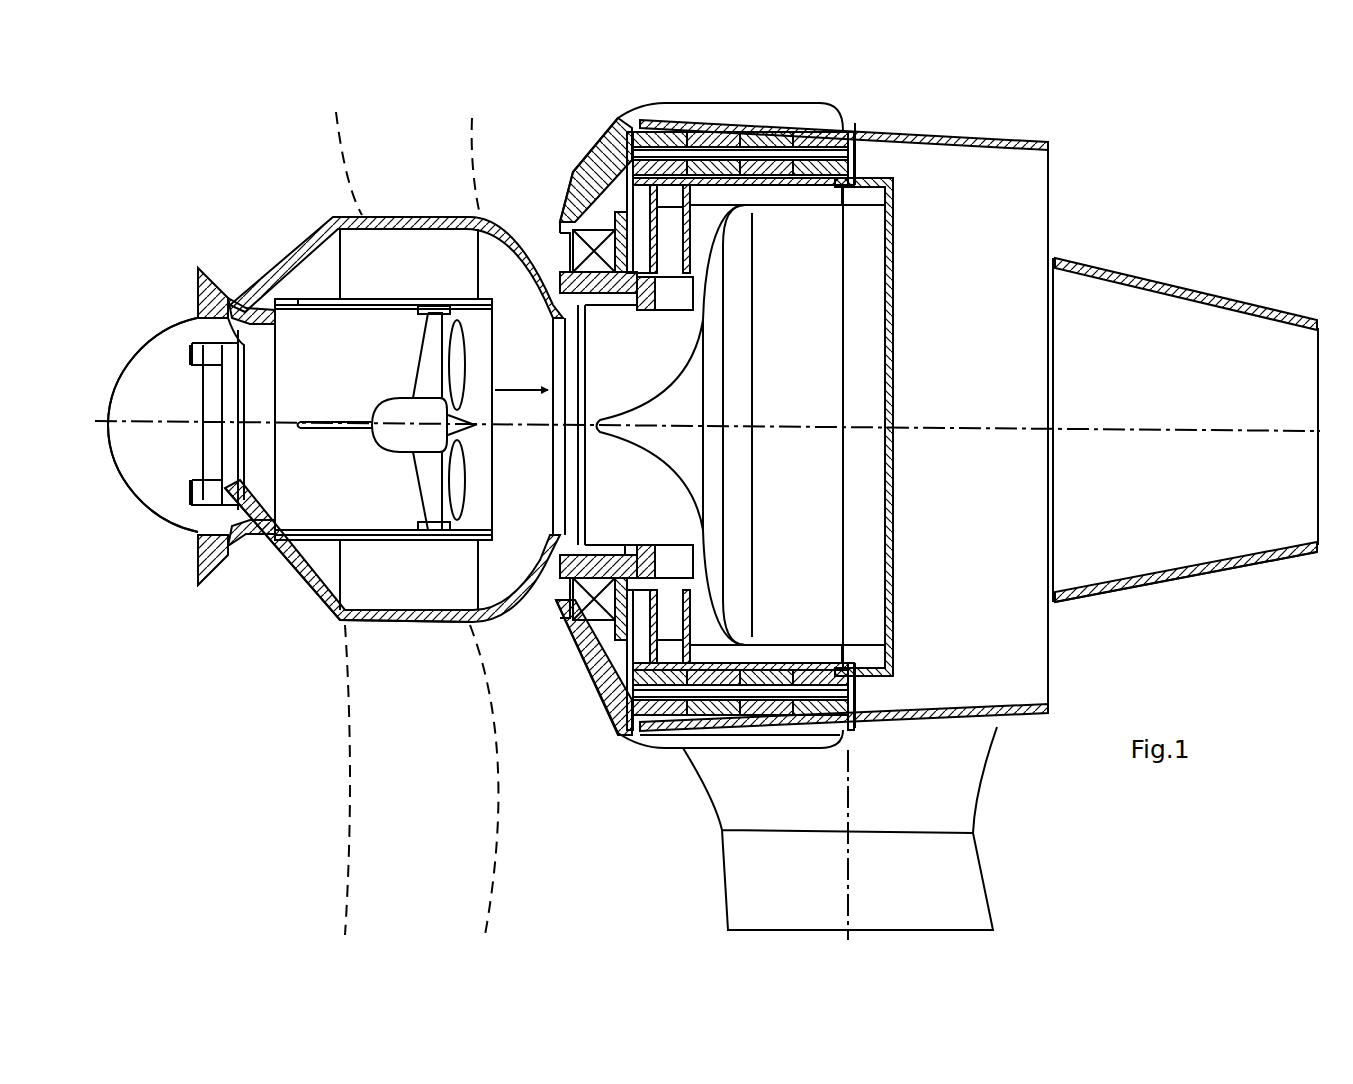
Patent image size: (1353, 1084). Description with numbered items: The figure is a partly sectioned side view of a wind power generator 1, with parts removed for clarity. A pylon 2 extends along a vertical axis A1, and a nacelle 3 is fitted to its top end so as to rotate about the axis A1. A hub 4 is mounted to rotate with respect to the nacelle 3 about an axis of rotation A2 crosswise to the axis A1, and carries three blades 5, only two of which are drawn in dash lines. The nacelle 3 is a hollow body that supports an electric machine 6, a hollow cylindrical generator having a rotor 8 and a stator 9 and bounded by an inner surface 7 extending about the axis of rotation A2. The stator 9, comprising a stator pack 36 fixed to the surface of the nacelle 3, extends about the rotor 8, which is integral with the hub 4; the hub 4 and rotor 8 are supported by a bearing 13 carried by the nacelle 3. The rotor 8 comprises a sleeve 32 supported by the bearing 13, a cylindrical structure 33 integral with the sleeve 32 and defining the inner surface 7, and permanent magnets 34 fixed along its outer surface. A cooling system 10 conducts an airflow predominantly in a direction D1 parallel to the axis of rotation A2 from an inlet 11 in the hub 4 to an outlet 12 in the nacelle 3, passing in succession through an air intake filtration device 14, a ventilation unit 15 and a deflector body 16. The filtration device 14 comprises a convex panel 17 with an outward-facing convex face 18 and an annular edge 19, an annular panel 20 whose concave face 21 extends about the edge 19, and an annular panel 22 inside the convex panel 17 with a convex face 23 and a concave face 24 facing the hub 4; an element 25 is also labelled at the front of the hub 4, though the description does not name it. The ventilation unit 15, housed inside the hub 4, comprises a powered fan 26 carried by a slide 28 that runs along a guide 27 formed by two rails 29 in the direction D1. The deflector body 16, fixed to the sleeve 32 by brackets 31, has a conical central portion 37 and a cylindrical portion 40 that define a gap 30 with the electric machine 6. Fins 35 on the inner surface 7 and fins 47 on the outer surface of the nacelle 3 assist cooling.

The wind power generator 1 is at (1200, 215).
The pylon 2 is at (950, 869).
The nacelle 3 is at (1108, 612).
The hub 4 is at (300, 615).
The blades 5 is at (372, 168).
The electric machine 6 is at (878, 136).
The inner surface 7 is at (850, 195).
The rotor 8 is at (860, 168).
The stator 9 is at (855, 145).
The cooling system 10 is at (245, 608).
The inlet 11 is at (210, 452).
The outlet 12 is at (1300, 528).
The bearing 13 is at (583, 260).
The air intake filtration device 14 is at (176, 318).
The ventilation unit 15 is at (345, 330).
The deflector body 16 is at (668, 365).
The convex panel 17 is at (150, 350).
The convex face 18 is at (125, 478).
The annular edge 19 is at (197, 530).
The annular panel 20 is at (207, 292).
The concave face 21 is at (203, 283).
The annular panel 22 is at (192, 364).
The convex face 23 is at (196, 425).
The concave face 24 is at (245, 348).
The hatched flange 25 is at (232, 302).
The powered fan 26 is at (405, 440).
The guide 27 is at (320, 338).
The slide 28 is at (425, 360).
The rails 29 is at (402, 300).
The gap 30 is at (828, 655).
The brackets 31 is at (700, 285).
The sleeve 32 is at (612, 545).
The cylindrical structure 33 is at (893, 188).
The permanent magnets 34 is at (630, 165).
The fins 35 is at (672, 195).
The stator pack 36 is at (710, 132).
The conical central portion 37 is at (665, 485).
The cylindrical portion 40 is at (762, 731).
The fins 47 is at (682, 105).
The vertical axis A1 is at (850, 915).
The axis of rotation A2 is at (1155, 430).
The direction D1 is at (510, 388).